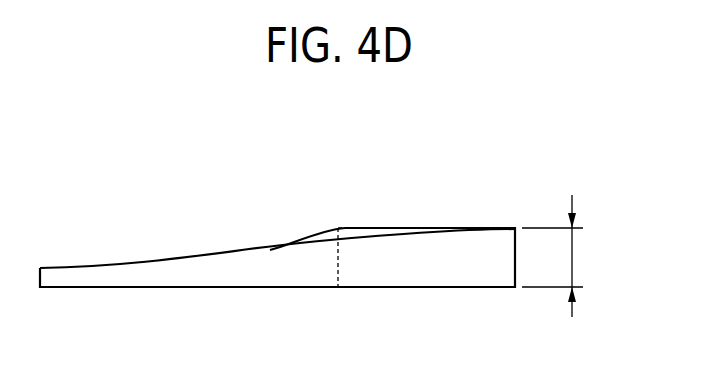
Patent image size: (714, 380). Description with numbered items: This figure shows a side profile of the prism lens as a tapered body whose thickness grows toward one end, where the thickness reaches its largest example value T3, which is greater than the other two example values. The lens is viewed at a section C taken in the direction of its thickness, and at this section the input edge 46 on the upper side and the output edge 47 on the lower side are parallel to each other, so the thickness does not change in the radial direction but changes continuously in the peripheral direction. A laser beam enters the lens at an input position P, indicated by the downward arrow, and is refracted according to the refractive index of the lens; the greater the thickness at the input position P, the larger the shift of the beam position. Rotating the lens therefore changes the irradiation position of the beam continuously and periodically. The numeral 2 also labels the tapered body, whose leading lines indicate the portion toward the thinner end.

The plate member 2 is at (266, 268).
The input edge 46 is at (425, 228).
The output edge 47 is at (430, 288).
The section C is at (385, 236).
The input position P is at (412, 185).
The thickness T3 is at (573, 257).